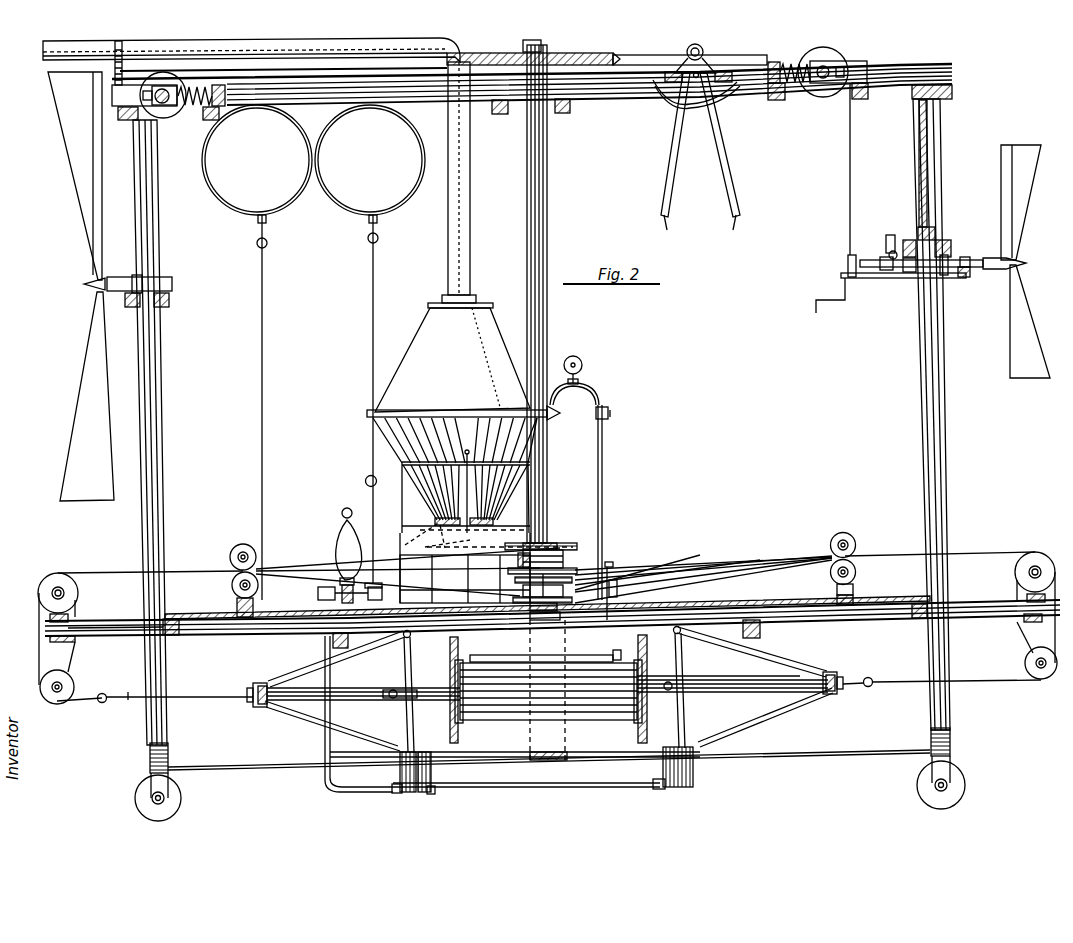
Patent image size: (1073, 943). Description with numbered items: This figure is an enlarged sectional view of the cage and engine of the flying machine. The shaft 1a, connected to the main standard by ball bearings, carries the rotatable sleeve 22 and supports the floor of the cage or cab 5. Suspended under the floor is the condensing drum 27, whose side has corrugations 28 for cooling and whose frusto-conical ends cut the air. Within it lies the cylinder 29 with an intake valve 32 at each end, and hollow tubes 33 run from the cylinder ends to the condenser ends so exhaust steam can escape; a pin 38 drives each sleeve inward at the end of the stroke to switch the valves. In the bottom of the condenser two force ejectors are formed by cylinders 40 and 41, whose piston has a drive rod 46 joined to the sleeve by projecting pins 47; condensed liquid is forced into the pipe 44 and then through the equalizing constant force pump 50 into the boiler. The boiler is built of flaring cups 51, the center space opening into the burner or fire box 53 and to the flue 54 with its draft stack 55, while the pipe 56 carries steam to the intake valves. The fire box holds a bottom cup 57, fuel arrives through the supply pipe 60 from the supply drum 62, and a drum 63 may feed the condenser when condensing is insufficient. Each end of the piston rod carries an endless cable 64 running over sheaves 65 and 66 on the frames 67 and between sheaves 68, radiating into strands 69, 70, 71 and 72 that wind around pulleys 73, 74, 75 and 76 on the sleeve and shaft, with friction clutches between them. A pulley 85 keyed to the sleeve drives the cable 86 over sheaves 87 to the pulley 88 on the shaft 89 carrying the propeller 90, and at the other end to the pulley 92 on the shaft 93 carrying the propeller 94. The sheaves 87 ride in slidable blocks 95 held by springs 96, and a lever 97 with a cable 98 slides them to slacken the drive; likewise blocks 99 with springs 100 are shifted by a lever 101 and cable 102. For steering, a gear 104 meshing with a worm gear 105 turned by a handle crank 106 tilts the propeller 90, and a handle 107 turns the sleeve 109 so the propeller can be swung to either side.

The shaft 1a is at (548, 436).
The cage or cab 5 is at (946, 443).
The sleeve 22 is at (547, 180).
The condensing drum 27 is at (770, 718).
The corrugations 28 is at (708, 632).
The cylinder 29 is at (590, 705).
The intake valve 32 is at (622, 655).
The hollow tubes 33 is at (343, 688).
The pin 38 is at (128, 700).
The cylinder 40 is at (190, 605).
The cylinder 41 is at (432, 790).
The pipe 44 is at (510, 787).
The drive rod 46 is at (410, 700).
The projecting pins 47 is at (390, 698).
The equalizing constant force pump 50 is at (345, 535).
The flaring cups 51 is at (373, 437).
The burner or fire box 53 is at (425, 545).
The flue 54 is at (407, 350).
The draft stack 55 is at (448, 232).
The pipe 56 is at (603, 450).
The bottom cup 57 is at (340, 581).
The liquid fuel supply pipe 60 is at (365, 478).
The supply drum 62 is at (355, 197).
The drum 63 is at (245, 192).
The endless rope or cable 64 is at (112, 572).
The sheave 65 is at (68, 680).
The sheave 66 is at (52, 582).
The frames 67 is at (122, 624).
The sheaves 68 is at (855, 535).
The strand 69 is at (752, 560).
The strand 70 is at (730, 565).
The strand 71 is at (745, 562).
The strand 72 is at (690, 558).
The pulley 73 is at (553, 547).
The pulley 74 is at (560, 568).
The pulley 75 is at (560, 578).
The pulley 76 is at (560, 598).
The pulley 85 is at (491, 57).
The cable 86 is at (630, 56).
The sheaves 87 is at (832, 55).
The pulley 88 is at (848, 265).
The shaft 89 is at (870, 278).
The propeller 90 is at (1015, 335).
The pulley 92 is at (165, 118).
The shaft 93 is at (162, 282).
The propeller 94 is at (80, 418).
The slidable blocks 95 is at (816, 82).
The springs 96 is at (790, 64).
The lever 97 is at (725, 160).
The cable 98 is at (740, 90).
The blocks 99 is at (168, 92).
The springs 100 is at (195, 88).
The lever 101 is at (676, 165).
The cable 102 is at (650, 100).
The gear 104 is at (965, 257).
The worm gear 105 is at (963, 277).
The handle crank 106 is at (818, 313).
The handle 107 is at (892, 235).
The sleeve 109 is at (915, 272).